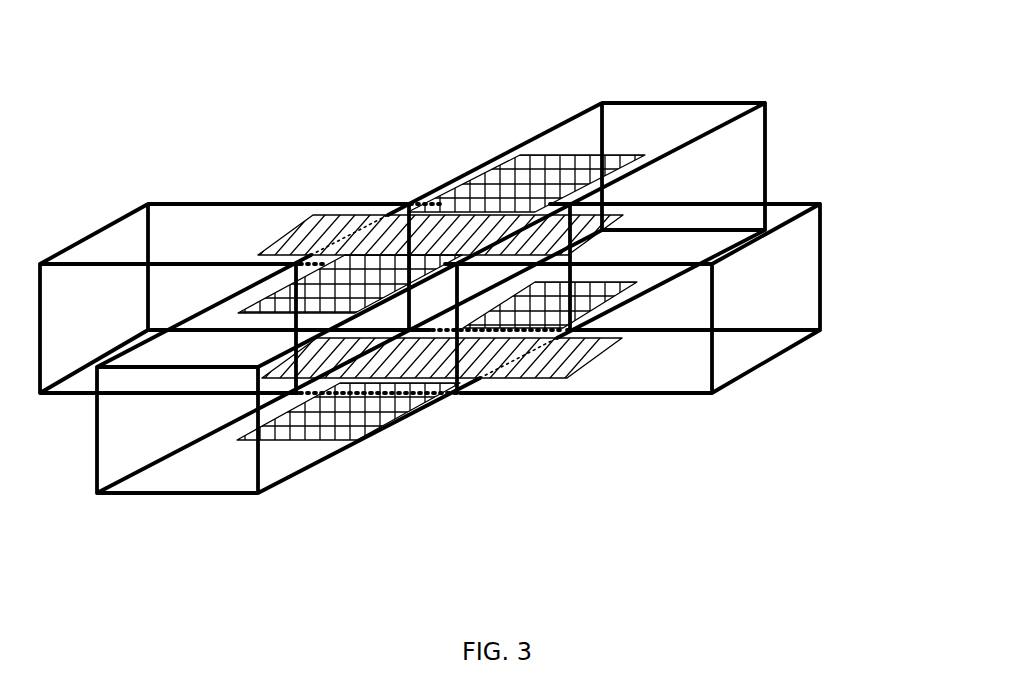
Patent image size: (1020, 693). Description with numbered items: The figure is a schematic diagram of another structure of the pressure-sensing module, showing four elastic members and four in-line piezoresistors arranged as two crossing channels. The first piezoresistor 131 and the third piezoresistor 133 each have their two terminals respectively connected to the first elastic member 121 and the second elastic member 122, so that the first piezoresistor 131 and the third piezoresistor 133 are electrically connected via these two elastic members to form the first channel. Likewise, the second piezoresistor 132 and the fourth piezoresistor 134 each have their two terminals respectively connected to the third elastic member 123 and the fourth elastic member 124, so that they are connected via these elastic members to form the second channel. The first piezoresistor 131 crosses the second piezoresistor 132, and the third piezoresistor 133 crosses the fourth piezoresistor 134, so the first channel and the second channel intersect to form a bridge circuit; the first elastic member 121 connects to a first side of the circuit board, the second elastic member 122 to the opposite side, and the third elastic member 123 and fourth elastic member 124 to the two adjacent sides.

The first elastic member 121 is at (645, 130).
The second elastic member 122 is at (185, 470).
The third elastic member 123 is at (157, 228).
The fourth elastic member 124 is at (795, 265).
The first piezoresistor 131 is at (516, 177).
The second piezoresistor 132 is at (366, 223).
The third piezoresistor 133 is at (340, 418).
The fourth piezoresistor 134 is at (543, 363).